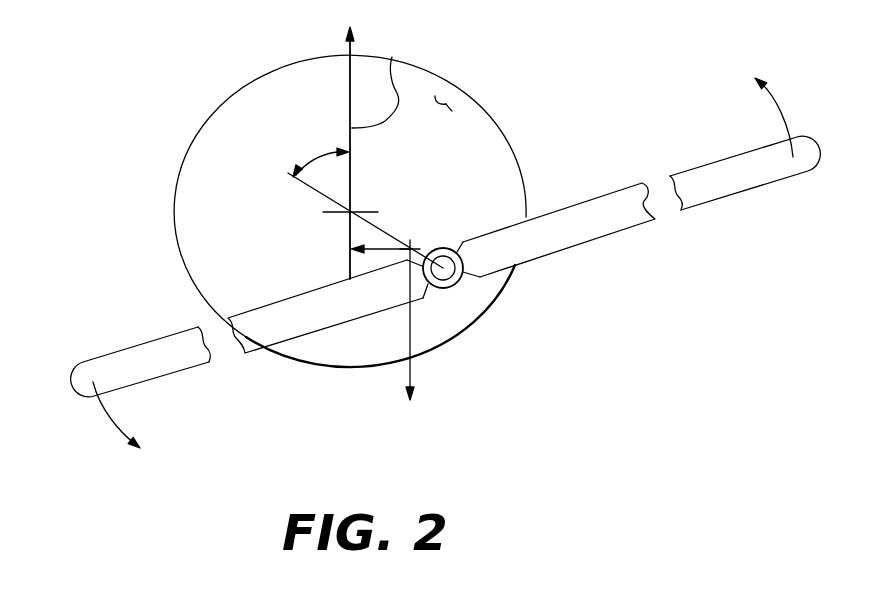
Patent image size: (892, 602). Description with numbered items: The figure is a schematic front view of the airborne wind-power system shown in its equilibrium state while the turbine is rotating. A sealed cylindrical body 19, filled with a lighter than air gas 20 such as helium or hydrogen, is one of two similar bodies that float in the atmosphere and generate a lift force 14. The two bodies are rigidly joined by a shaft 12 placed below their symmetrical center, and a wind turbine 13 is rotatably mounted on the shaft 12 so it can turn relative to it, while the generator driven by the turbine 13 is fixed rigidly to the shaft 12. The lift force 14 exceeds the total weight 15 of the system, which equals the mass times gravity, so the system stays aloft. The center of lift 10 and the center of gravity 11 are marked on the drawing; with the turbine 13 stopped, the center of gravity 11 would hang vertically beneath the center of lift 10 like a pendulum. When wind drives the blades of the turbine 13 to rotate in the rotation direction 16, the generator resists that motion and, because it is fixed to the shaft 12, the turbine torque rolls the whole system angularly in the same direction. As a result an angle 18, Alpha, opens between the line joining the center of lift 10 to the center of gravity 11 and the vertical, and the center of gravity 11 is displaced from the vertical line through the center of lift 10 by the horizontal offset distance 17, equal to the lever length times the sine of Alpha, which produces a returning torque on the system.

The center of lift 10 is at (350, 211).
The center of gravity 11 is at (411, 249).
The shaft 12 is at (460, 283).
The wind turbine 13 is at (133, 348).
The lift force 14 is at (392, 57).
The total weight 15 is at (412, 380).
The rotation direction 16 is at (118, 422).
The horizontal offset distance 17 is at (378, 245).
The angle 18 is at (320, 154).
The sealed cylindrical body 19 is at (513, 140).
The lighter than air gas 20 is at (458, 88).